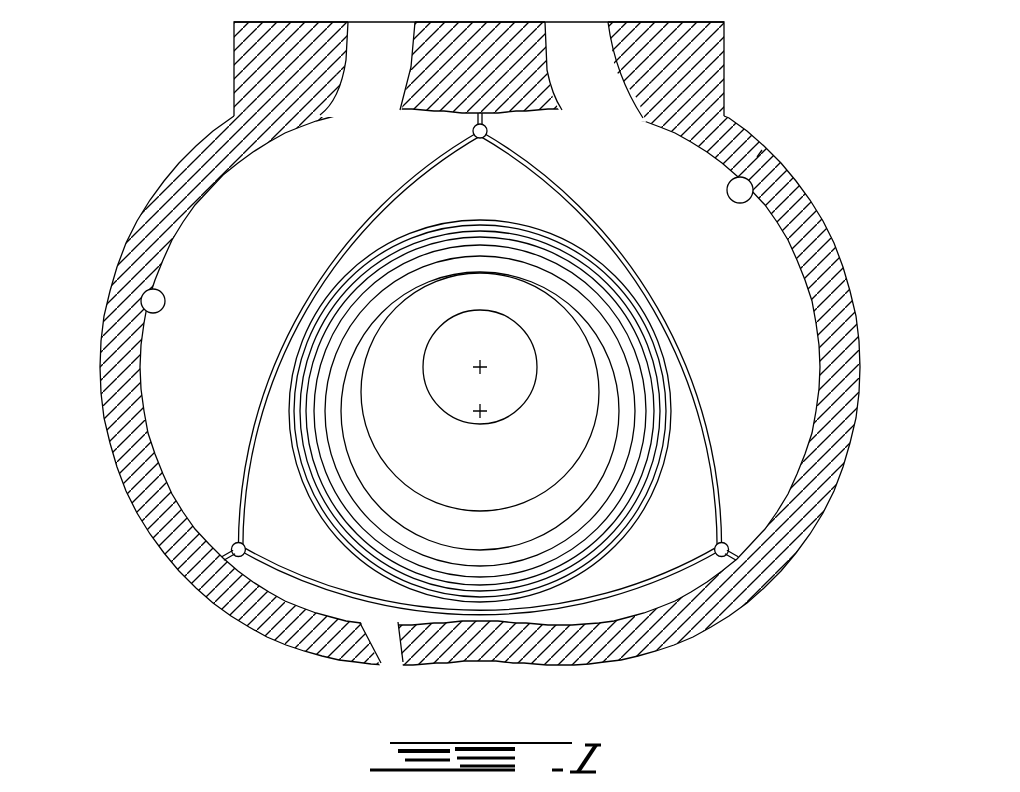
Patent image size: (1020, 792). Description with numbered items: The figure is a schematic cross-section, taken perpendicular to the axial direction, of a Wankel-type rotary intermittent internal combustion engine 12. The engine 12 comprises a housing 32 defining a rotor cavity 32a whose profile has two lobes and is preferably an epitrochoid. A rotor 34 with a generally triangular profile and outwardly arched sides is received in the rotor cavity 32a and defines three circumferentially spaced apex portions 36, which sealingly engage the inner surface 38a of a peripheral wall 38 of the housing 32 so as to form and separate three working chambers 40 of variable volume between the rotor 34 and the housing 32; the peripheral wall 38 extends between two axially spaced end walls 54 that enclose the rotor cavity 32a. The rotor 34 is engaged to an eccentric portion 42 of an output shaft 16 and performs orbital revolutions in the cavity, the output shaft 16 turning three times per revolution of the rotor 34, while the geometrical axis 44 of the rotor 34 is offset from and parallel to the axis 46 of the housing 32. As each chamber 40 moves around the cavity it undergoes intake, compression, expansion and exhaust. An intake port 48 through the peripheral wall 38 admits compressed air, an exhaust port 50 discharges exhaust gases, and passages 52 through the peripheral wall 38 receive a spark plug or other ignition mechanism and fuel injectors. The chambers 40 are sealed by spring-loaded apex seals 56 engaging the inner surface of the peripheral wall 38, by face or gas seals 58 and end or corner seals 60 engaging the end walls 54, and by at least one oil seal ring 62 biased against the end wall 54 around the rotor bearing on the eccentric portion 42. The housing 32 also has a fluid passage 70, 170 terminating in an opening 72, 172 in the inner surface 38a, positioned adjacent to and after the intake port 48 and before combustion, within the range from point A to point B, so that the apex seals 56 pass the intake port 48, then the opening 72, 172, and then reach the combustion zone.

The rotary intermittent internal combustion engine 12 is at (156, 122).
The output shaft 16 is at (503, 397).
The housing 32 is at (792, 154).
The rotor cavity 32a is at (180, 379).
The rotor 34 is at (708, 385).
The apex portions 36 is at (749, 572).
The peripheral wall 38 is at (828, 252).
The inner surface 38a is at (147, 312).
The working chambers 40 is at (238, 293).
The eccentric portion 42 is at (505, 477).
The geometrical axis 44 is at (477, 412).
The axis 46 is at (477, 368).
The intake port 48 is at (588, 87).
The exhaust port 50 is at (370, 87).
The passages 52 is at (380, 650).
The end walls 54 is at (795, 426).
The apex seals 56 is at (210, 563).
The face or gas seals 58 is at (243, 465).
The end or corner seals 60 is at (228, 549).
The oil seal ring 62 is at (573, 569).
The fluid passage 70 is at (817, 80).
The fluid passage 170 is at (757, 157).
The opening 72 is at (819, 187).
The opening 172 is at (776, 199).